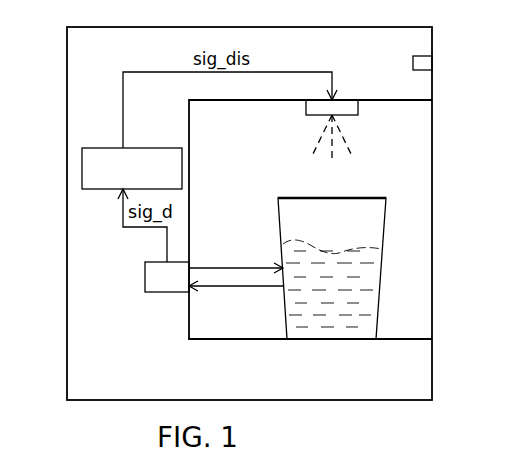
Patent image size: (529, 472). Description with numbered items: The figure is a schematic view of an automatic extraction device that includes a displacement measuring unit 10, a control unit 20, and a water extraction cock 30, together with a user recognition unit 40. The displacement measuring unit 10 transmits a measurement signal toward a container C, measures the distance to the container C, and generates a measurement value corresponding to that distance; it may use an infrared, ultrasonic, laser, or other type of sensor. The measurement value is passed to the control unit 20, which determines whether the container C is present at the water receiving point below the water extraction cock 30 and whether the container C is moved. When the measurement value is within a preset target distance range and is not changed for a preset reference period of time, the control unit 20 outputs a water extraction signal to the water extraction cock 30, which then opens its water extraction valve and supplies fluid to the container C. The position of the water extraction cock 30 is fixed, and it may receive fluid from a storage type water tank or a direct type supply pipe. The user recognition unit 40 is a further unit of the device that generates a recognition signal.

The displacement measuring unit 10 is at (145, 275).
The control unit 20 is at (82, 167).
The water extraction cock 30 is at (355, 110).
The user recognition unit 40 is at (432, 62).
The container C is at (382, 262).